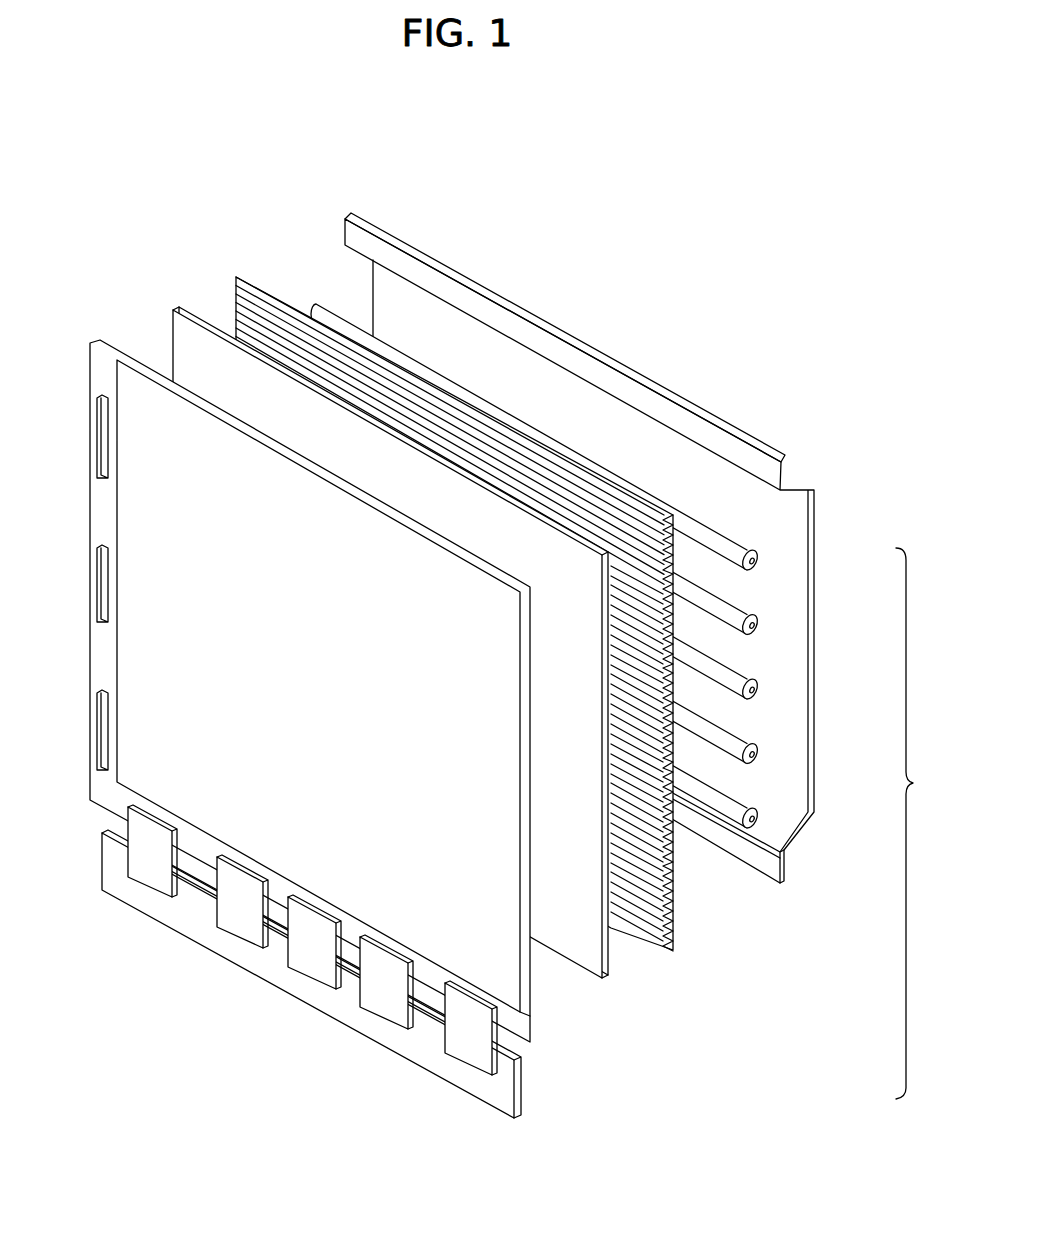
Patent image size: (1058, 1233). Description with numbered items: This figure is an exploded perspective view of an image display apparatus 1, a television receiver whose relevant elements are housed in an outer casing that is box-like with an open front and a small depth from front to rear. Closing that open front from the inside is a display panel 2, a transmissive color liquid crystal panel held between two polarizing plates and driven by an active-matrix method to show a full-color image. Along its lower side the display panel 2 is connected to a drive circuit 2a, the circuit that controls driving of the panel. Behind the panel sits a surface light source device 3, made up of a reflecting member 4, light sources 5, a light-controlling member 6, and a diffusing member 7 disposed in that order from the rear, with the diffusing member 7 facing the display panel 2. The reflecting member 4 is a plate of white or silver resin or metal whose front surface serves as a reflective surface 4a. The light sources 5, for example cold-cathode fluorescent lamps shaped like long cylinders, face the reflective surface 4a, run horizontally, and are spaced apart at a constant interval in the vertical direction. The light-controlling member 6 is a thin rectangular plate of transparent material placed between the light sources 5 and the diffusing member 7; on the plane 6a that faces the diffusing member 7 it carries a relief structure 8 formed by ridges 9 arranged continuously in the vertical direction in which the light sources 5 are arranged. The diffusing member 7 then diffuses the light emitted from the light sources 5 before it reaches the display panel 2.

The image display apparatus 1 is at (212, 157).
The display panel 2 is at (142, 495).
The drive circuit 2a is at (278, 968).
The surface light source device 3 is at (913, 823).
The reflecting member 4 is at (768, 862).
The reflective surface 4a is at (656, 450).
The light sources 5 is at (758, 562).
The light-controlling member 6 is at (660, 953).
The plane 6a is at (676, 922).
The diffusing member 7 is at (583, 958).
The relief structure 8 is at (237, 322).
The ridges 9 is at (237, 278).